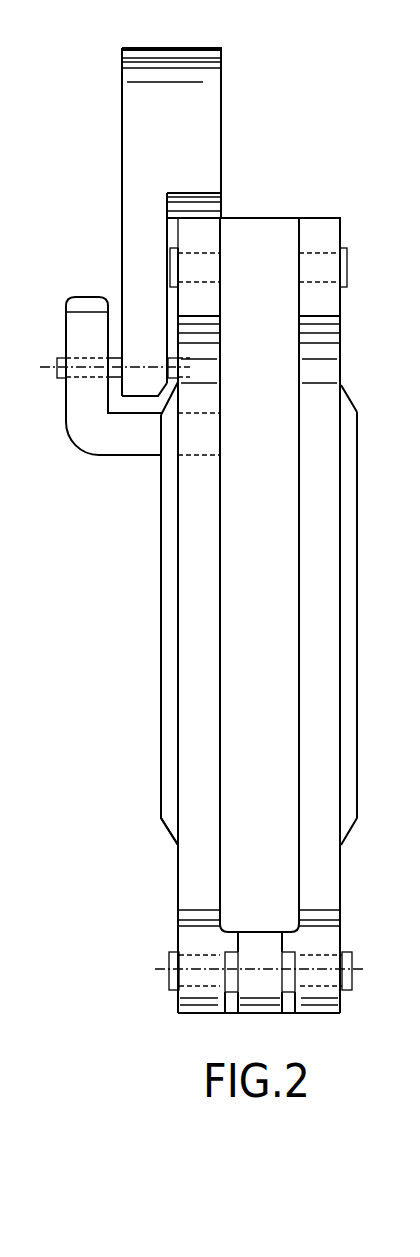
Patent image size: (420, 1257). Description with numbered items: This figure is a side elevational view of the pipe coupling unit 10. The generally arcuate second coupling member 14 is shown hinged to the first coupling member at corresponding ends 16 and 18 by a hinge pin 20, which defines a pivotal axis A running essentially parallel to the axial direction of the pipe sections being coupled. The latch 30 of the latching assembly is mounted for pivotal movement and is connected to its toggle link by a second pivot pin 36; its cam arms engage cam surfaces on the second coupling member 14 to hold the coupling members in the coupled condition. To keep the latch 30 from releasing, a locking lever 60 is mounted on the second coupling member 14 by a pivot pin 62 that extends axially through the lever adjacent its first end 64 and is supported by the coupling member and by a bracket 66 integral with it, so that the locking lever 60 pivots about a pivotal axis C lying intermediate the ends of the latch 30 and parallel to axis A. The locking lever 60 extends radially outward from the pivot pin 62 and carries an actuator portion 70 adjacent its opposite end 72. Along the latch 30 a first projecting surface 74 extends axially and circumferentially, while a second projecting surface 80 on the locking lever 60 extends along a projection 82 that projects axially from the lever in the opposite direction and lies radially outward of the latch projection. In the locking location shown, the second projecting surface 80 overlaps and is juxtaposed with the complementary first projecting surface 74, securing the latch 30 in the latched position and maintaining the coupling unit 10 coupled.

The pipe coupling unit 10 is at (152, 825).
The second coupling member 14 is at (163, 595).
The end of first coupling member 16 is at (200, 1013).
The end of second coupling member 18 is at (255, 1014).
The hinge pin 20 is at (168, 975).
The latch 30 is at (215, 230).
The second pivot pin 36 is at (346, 258).
The locking lever 60 is at (127, 175).
The pivot pin 62 is at (53, 362).
The first end of locking lever 64 is at (146, 400).
The bracket 66 is at (80, 442).
The actuator portion 70 is at (208, 100).
The opposite end of locking lever 72 is at (167, 48).
The first projecting surface 74 is at (207, 213).
The second projecting surface 80 is at (187, 219).
The projection 82 is at (213, 180).
The pivotal axis A is at (354, 969).
The pivotal axis C is at (43, 367).